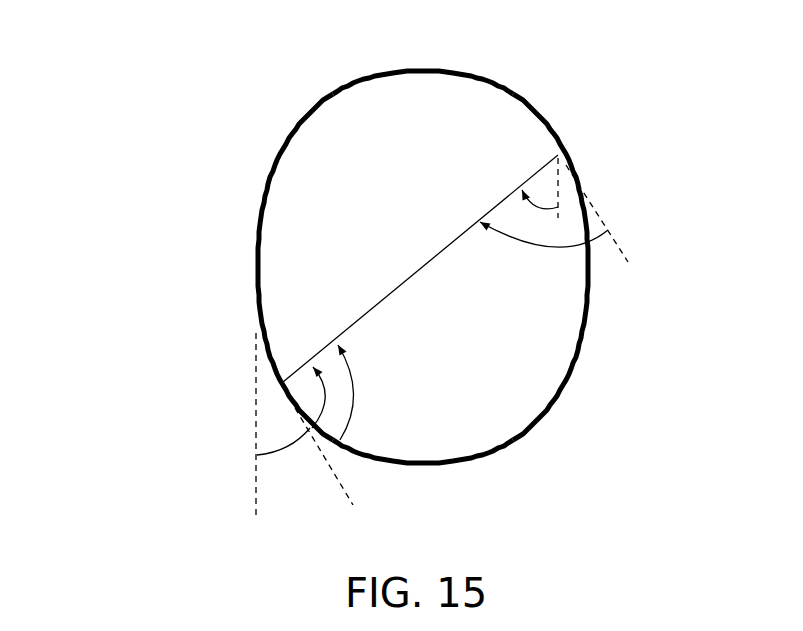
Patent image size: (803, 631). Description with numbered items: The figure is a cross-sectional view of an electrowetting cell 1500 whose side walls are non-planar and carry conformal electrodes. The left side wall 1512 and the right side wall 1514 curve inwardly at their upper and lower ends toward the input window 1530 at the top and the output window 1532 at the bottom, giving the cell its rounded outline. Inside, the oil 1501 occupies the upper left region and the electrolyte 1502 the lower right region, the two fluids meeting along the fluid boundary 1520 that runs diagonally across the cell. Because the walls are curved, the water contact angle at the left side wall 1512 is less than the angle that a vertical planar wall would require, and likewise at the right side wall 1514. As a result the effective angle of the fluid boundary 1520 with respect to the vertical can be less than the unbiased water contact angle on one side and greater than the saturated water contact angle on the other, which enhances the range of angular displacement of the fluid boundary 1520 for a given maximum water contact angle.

The fluid droplet / lens structure 1500 is at (381, 267).
The oil 1501 is at (355, 272).
The electrolyte 1502 is at (507, 378).
The left side wall with conformal electrode 1512 is at (257, 322).
The right side wall with conformal electrode 1514 is at (588, 287).
The fluid boundary 1520 is at (380, 303).
The input window 1530 is at (420, 71).
The output window 1532 is at (420, 464).